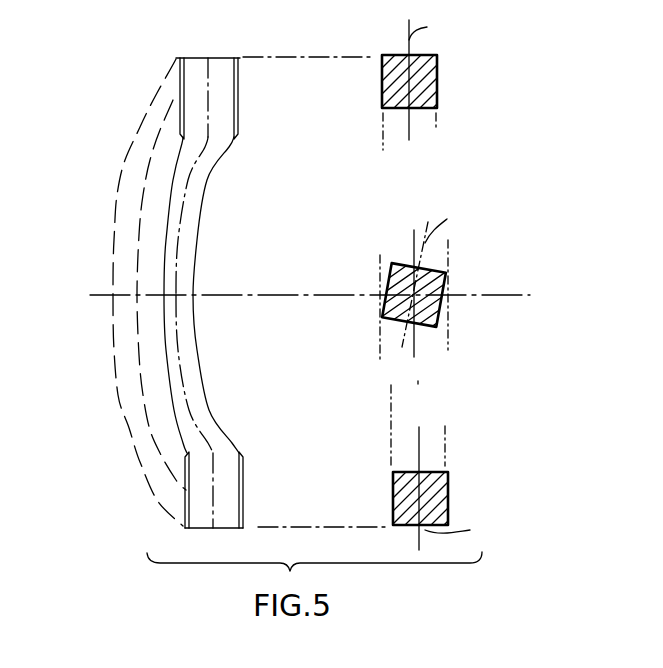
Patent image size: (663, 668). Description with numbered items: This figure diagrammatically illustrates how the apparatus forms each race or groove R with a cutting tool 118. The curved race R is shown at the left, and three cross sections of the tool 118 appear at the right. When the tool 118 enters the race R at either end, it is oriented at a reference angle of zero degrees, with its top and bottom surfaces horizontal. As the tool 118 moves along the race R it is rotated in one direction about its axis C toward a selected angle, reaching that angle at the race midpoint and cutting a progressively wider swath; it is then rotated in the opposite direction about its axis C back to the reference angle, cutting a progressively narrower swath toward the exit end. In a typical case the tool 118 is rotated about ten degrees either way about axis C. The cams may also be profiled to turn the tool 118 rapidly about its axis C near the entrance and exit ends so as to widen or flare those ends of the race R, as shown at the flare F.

The tool 118 is at (430, 97).
The race R is at (197, 62).
The flare F is at (185, 78).
The axis C is at (405, 80).